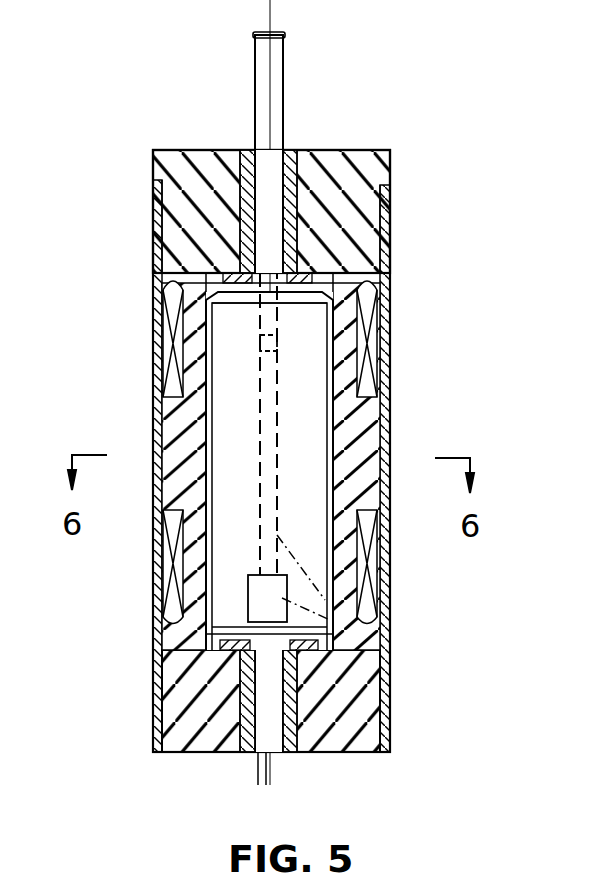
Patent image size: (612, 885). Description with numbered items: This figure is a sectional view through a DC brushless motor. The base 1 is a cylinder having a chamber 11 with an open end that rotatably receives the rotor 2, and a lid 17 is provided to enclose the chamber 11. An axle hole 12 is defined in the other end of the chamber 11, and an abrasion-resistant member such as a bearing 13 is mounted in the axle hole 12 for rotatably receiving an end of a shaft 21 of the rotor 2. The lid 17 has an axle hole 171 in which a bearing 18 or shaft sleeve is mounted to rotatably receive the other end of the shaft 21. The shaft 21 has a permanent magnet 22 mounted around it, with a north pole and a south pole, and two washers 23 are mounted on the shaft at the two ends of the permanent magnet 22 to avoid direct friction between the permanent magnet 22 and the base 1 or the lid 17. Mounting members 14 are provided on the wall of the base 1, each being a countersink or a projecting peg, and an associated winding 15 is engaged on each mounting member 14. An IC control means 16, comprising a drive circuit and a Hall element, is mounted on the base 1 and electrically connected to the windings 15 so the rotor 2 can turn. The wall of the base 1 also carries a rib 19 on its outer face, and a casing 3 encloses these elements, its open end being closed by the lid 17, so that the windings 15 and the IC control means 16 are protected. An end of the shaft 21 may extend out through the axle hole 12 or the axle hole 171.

The base 1 is at (360, 718).
The rotor 2 is at (333, 277).
The casing 3 is at (385, 326).
The chamber 11 is at (213, 290).
The axle hole 12 is at (258, 768).
The bearing 13 is at (288, 748).
The mounting member 14 is at (170, 432).
The winding 15 is at (174, 366).
The IC control means 16 is at (325, 655).
The lid 17 is at (378, 153).
The bearing 18 is at (246, 153).
The rib 19 is at (372, 600).
The shaft 21 is at (275, 62).
The permanent magnet 22 is at (218, 568).
The washer 23 is at (222, 276).
The axle hole 171 is at (288, 152).